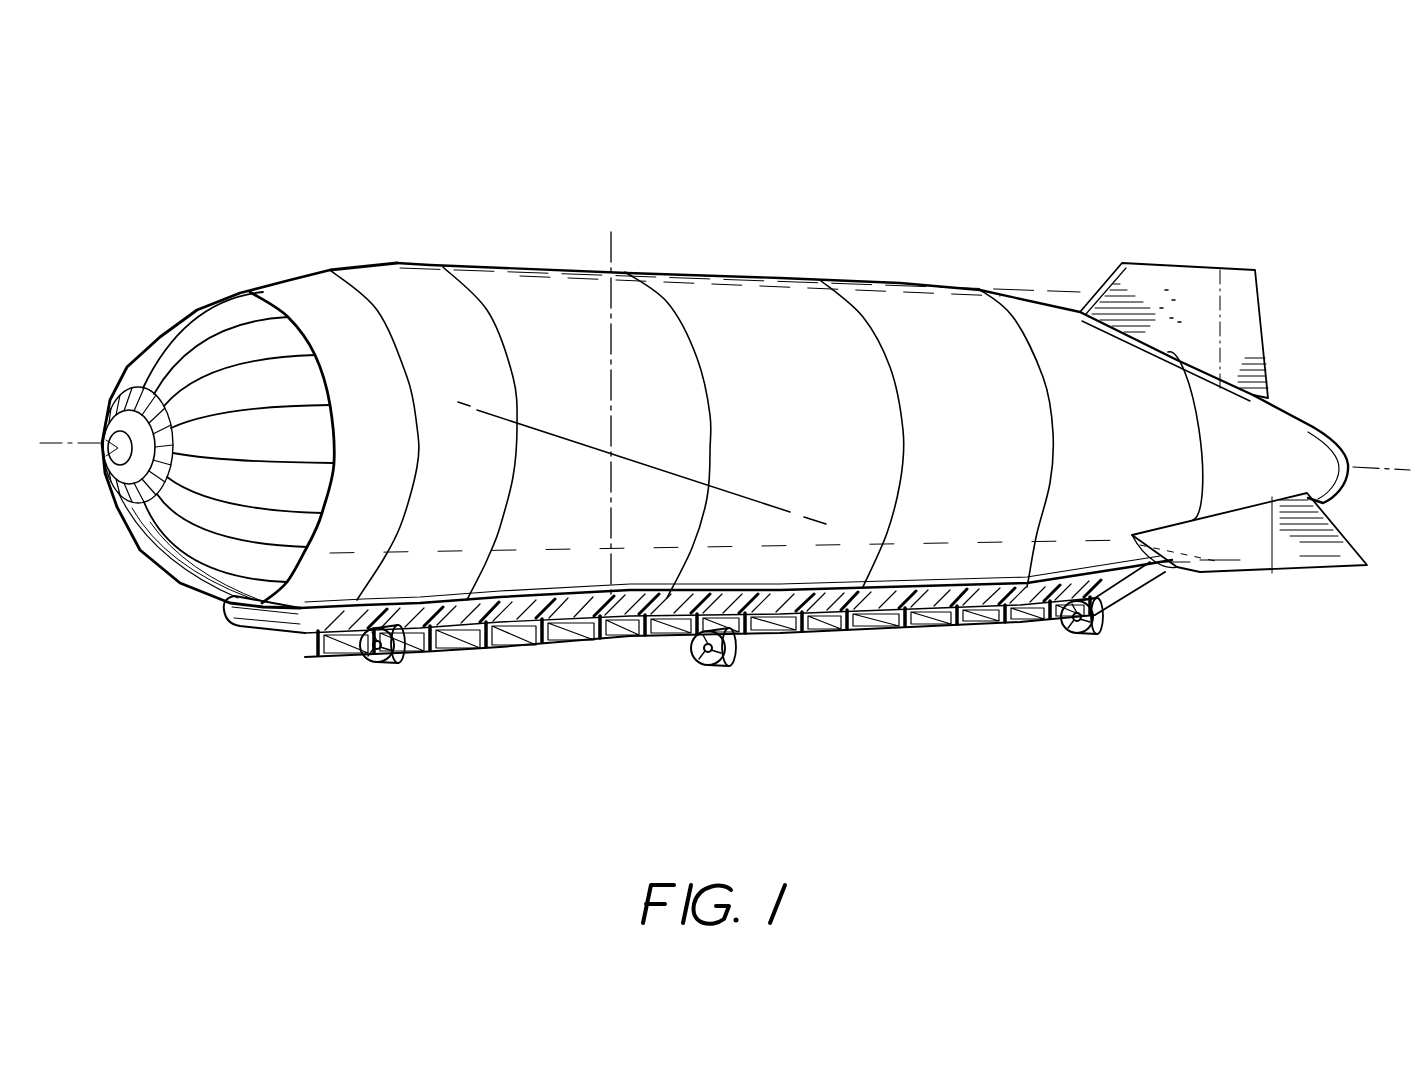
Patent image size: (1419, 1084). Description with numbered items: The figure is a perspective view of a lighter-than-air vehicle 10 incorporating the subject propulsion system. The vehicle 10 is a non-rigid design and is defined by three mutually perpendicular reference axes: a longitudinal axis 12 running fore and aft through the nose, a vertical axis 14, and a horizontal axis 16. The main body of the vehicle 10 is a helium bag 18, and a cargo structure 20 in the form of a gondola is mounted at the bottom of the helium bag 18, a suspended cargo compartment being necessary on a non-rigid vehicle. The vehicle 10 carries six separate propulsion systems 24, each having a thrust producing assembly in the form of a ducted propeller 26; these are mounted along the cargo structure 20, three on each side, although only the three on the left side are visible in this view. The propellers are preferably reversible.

The lighter-than-air vehicle 10 is at (414, 196).
The longitudinal axis 12 is at (74, 443).
The vertical axis 14 is at (613, 262).
The horizontal axis 16 is at (782, 512).
The helium bag 18 is at (905, 278).
The cargo structure 20 is at (577, 645).
The propulsion system 24 is at (366, 674).
The ducted propeller 26 is at (393, 670).